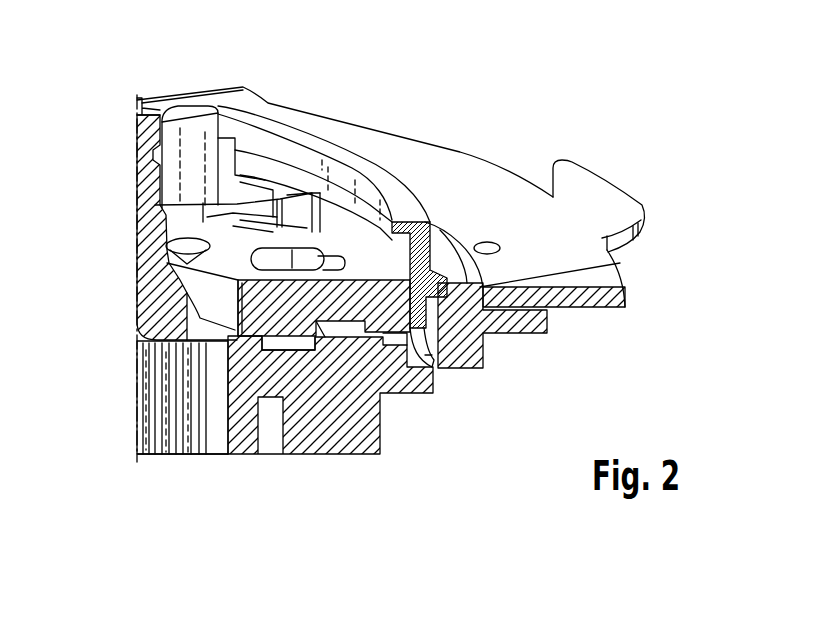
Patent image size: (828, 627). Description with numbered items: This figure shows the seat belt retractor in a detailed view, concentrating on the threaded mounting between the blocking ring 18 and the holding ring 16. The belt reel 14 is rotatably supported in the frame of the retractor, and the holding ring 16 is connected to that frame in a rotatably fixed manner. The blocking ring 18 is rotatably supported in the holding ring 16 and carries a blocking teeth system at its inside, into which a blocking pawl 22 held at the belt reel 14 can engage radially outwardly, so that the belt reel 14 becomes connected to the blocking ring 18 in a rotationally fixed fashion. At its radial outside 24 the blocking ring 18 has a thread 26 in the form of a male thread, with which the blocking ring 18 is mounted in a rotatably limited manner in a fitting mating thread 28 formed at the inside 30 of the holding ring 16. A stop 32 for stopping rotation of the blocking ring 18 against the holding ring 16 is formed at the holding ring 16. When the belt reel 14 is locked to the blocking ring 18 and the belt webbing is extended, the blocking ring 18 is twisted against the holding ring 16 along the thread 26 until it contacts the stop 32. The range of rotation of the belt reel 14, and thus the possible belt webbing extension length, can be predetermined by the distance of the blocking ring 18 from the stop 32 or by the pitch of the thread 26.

The belt reel 14 is at (165, 403).
The holding ring 16 is at (538, 334).
The blocking ring 18 is at (285, 133).
The blocking pawl 22 is at (226, 257).
The radial outside 24 is at (438, 224).
The thread 26 is at (445, 228).
The mating thread 28 is at (613, 265).
The inside 30 is at (447, 340).
The stop 32 is at (445, 362).